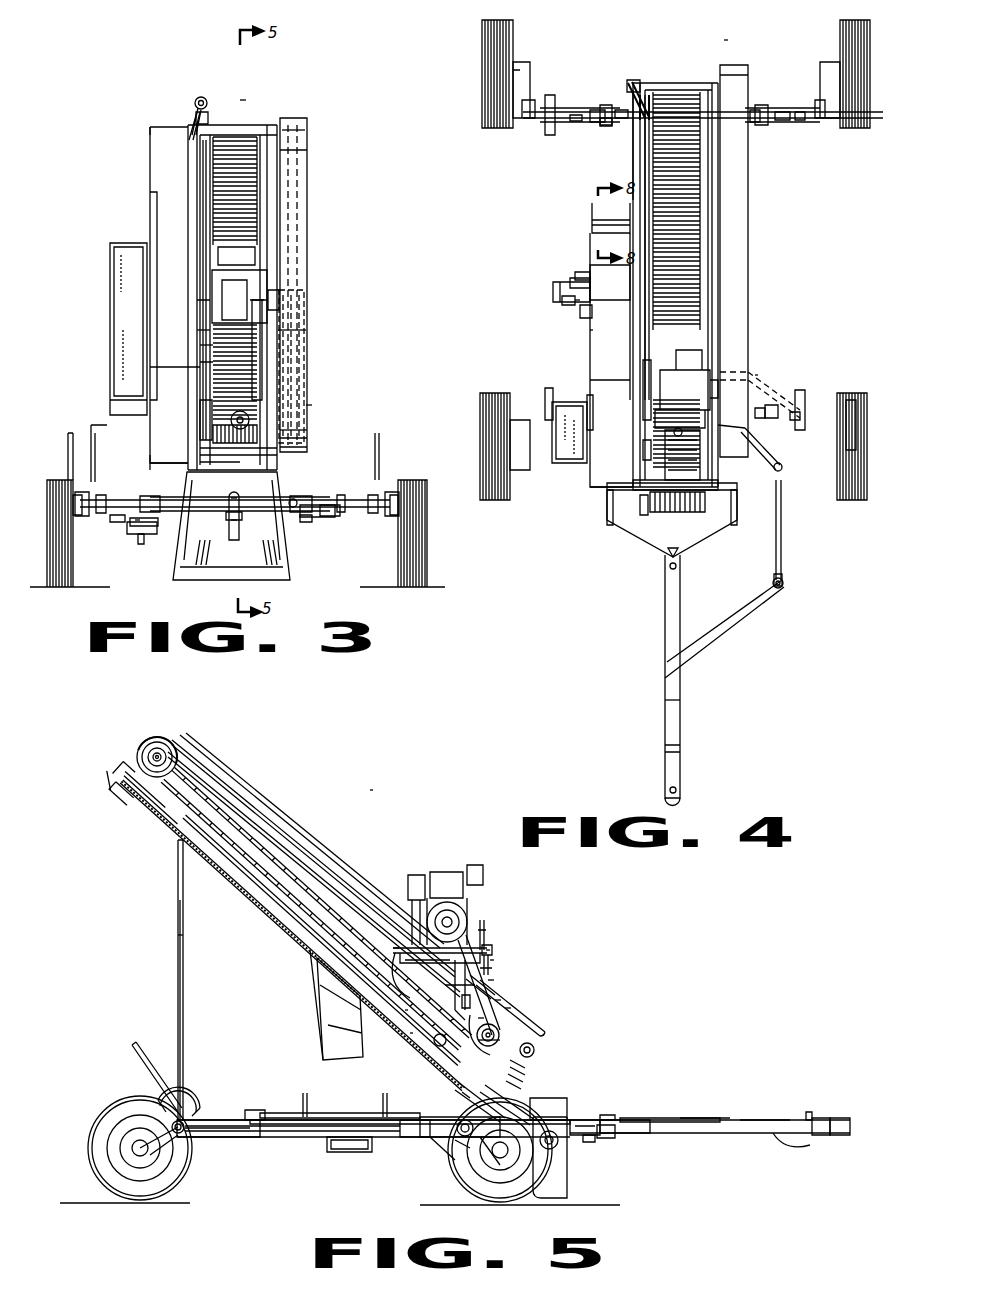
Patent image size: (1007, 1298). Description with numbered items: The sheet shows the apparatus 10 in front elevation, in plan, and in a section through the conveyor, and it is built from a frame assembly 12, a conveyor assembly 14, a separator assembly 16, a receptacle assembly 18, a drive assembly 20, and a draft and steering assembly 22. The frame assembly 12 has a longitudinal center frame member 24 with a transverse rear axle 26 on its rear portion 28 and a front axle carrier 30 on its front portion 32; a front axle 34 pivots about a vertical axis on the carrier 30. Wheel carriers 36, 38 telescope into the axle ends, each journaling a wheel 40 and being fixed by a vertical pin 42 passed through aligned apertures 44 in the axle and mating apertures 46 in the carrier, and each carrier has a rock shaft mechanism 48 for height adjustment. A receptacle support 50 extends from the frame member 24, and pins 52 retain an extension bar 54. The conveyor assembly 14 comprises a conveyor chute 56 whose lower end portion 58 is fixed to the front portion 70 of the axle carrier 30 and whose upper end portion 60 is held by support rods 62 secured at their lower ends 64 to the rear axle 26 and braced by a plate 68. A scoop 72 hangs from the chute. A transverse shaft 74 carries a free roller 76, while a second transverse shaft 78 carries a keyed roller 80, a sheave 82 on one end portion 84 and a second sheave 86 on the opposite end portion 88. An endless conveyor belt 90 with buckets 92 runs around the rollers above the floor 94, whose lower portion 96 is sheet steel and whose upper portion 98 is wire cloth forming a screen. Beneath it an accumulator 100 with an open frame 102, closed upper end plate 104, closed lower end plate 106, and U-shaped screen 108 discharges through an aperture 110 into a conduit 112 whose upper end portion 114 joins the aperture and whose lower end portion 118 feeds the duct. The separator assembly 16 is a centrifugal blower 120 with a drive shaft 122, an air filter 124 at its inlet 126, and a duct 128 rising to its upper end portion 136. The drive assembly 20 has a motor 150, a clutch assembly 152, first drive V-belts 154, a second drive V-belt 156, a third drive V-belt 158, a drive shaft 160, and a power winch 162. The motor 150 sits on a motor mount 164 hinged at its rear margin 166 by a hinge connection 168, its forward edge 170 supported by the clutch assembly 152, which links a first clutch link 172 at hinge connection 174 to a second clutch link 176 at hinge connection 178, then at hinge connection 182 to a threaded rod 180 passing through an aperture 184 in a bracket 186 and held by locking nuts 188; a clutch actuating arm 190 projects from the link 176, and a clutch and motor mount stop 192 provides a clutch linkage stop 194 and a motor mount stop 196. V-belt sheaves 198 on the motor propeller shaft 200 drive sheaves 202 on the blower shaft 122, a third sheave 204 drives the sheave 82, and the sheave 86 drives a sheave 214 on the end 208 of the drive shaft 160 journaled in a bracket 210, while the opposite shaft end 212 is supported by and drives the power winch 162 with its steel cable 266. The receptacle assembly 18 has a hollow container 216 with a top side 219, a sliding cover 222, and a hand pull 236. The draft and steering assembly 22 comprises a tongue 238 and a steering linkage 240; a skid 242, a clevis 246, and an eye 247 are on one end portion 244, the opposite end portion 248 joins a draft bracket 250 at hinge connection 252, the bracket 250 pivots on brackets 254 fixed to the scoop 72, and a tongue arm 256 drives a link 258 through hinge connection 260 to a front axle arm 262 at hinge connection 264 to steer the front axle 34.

In FIG. 3, the apparatus 10 is at (245, 98).
In FIG. 4, the apparatus 10 is at (735, 32).
In FIG. 5, the apparatus 10 is at (378, 778).
In FIG. 3, the frame assembly 12 is at (295, 530).
In FIG. 4, the frame assembly 12 is at (608, 92).
In FIG. 5, the frame assembly 12 is at (265, 1140).
In FIG. 3, the conveyor assembly 14 is at (252, 125).
In FIG. 4, the conveyor assembly 14 is at (712, 290).
In FIG. 5, the conveyor assembly 14 is at (410, 1035).
In FIG. 3, the separator assembly 16 is at (140, 462).
In FIG. 4, the separator assembly 16 is at (580, 333).
In FIG. 3, the receptacle assembly 18 is at (142, 555).
In FIG. 4, the receptacle assembly 18 is at (570, 310).
In FIG. 3, the drive assembly 20 is at (320, 408).
In FIG. 4, the drive assembly 20 is at (765, 362).
In FIG. 5, the drive assembly 20 is at (480, 885).
In FIG. 3, the draft and steering assembly 22 is at (233, 530).
In FIG. 4, the draft and steering assembly 22 is at (695, 690).
In FIG. 5, the draft and steering assembly 22 is at (765, 1100).
In FIG. 5, the longitudinal center frame member 24 is at (286, 1138).
In FIG. 4, the transverse rear axle 26 is at (602, 118).
In FIG. 5, the transverse rear axle 26 is at (190, 1130).
In FIG. 5, the rear portion 28 is at (207, 1140).
In FIG. 5, the front axle carrier 30 is at (470, 1160).
In FIG. 5, the front portion 32 is at (408, 1138).
In FIG. 4, the front axle 34 is at (738, 378).
In FIG. 5, the front axle 34 is at (455, 1140).
In FIG. 4, the wheel carrier 36 is at (555, 105).
In FIG. 3, the wheel carrier 38 is at (125, 505).
In FIG. 4, the wheel carrier 38 is at (800, 118).
In FIG. 3, the wheel 40 is at (58, 476).
In FIG. 4, the wheel 40 is at (515, 30).
In FIG. 5, the wheel 40 is at (150, 1195).
In FIG. 3, the vertically oriented pin 42 is at (152, 512).
In FIG. 4, the vertically oriented pin 42 is at (596, 110).
In FIG. 3, the aligned apertures 44 is at (150, 515).
In FIG. 4, the aligned apertures 44 is at (605, 108).
In FIG. 4, the aligned apertures 46 is at (575, 122).
In FIG. 3, the rock shaft mechanism 48 is at (96, 520).
In FIG. 4, the rock shaft mechanism 48 is at (528, 104).
In FIG. 5, the rock shaft mechanism 48 is at (165, 1178).
In FIG. 3, the receptacle support 50 is at (150, 540).
In FIG. 4, the receptacle support 50 is at (585, 312).
In FIG. 5, the receptacle support 50 is at (335, 1152).
In FIG. 5, the parallel pins 52 is at (305, 1100).
In FIG. 5, the extension bar 54 is at (330, 1115).
In FIG. 3, the conveyor chute 56 is at (272, 207).
In FIG. 4, the conveyor chute 56 is at (640, 168).
In FIG. 5, the conveyor chute 56 is at (405, 1020).
In FIG. 5, the lower end portion 58 is at (560, 1110).
In FIG. 4, the upper end portion 60 is at (636, 148).
In FIG. 5, the upper end portion 60 is at (150, 815).
In FIG. 5, the support rods 62 is at (178, 882).
In FIG. 5, the lower end 64 is at (190, 1103).
In FIG. 5, the plate 68 is at (180, 940).
In FIG. 5, the front portion 70 is at (520, 1105).
In FIG. 3, the scoop 72 is at (270, 582).
In FIG. 5, the scoop 72 is at (570, 1188).
In FIG. 5, the transverse shaft 74 is at (560, 1120).
In FIG. 4, the roller 76 is at (645, 505).
In FIG. 5, the roller 76 is at (548, 1150).
In FIG. 5, the second transverse shaft 78 is at (152, 748).
In FIG. 5, the roller 80 is at (170, 752).
In FIG. 3, the sheave 82 is at (308, 127).
In FIG. 3, the end portion 84 is at (300, 115).
In FIG. 4, the end portion 84 is at (722, 78).
In FIG. 4, the second sheave 86 is at (618, 112).
In FIG. 4, the opposite end portion 88 is at (642, 82).
In FIG. 3, the endless conveyor belt 90 is at (250, 176).
In FIG. 4, the endless conveyor belt 90 is at (690, 222).
In FIG. 5, the endless conveyor belt 90 is at (220, 798).
In FIG. 5, the buckets or vanes 92 is at (238, 820).
In FIG. 5, the floor 94 is at (258, 840).
In FIG. 5, the lower portion 96 is at (478, 1082).
In FIG. 5, the upper portion 98 is at (196, 778).
In FIG. 3, the accumulator 100 is at (198, 340).
In FIG. 5, the accumulator 100 is at (275, 928).
In FIG. 3, the open frame 102 is at (200, 350).
In FIG. 5, the closed upper end plate 104 is at (145, 797).
In FIG. 3, the closed lower end plate 106 is at (200, 365).
In FIG. 5, the closed lower end plate 106 is at (400, 1008).
In FIG. 5, the screen 108 is at (220, 878).
In FIG. 5, the aperture 110 is at (330, 995).
In FIG. 5, the conduit 112 is at (318, 1022).
In FIG. 5, the upper end portion 114 is at (310, 968).
In FIG. 4, the lower end portion 118 is at (600, 280).
In FIG. 3, the centrifugal blower 120 is at (158, 430).
In FIG. 4, the centrifugal blower 120 is at (600, 475).
In FIG. 3, the drive shaft 122 is at (245, 415).
In FIG. 4, the drive shaft 122 is at (680, 435).
In FIG. 5, the drive shaft 122 is at (500, 1038).
In FIG. 3, the air filter 124 is at (118, 294).
In FIG. 4, the air filter 124 is at (556, 468).
In FIG. 3, the inlet 126 is at (148, 412).
In FIG. 4, the inlet 126 is at (590, 400).
In FIG. 3, the duct 128 is at (160, 222).
In FIG. 4, the duct 128 is at (590, 350).
In FIG. 3, the upper end portion 136 is at (150, 133).
In FIG. 4, the upper end portion 136 is at (592, 215).
In FIG. 3, the motor 150 is at (228, 287).
In FIG. 4, the motor 150 is at (705, 390).
In FIG. 5, the motor 150 is at (455, 875).
In FIG. 3, the clutch assembly 152 is at (258, 385).
In FIG. 5, the clutch assembly 152 is at (482, 988).
In FIG. 3, the first drive V-belts 154 is at (290, 345).
In FIG. 5, the first drive V-belts 154 is at (488, 978).
In FIG. 3, the second drive V-belt 156 is at (285, 218).
In FIG. 5, the second drive V-belt 156 is at (308, 858).
In FIG. 3, the third drive V-belt 158 is at (191, 115).
In FIG. 4, the third drive V-belt 158 is at (647, 80).
In FIG. 3, the drive shaft 160 is at (205, 180).
In FIG. 4, the drive shaft 160 is at (648, 345).
In FIG. 3, the power winch 162 is at (262, 450).
In FIG. 4, the power winch 162 is at (630, 500).
In FIG. 5, the power winch 162 is at (535, 1052).
In FIG. 5, the motor mount 164 is at (475, 908).
In FIG. 5, the rear margin 166 is at (415, 875).
In FIG. 5, the hinge connection 168 is at (393, 950).
In FIG. 5, the forward edge 170 is at (482, 935).
In FIG. 5, the first clutch link 172 is at (515, 1010).
In FIG. 5, the hinge connection 174 is at (510, 1018).
In FIG. 5, the second clutch link 176 is at (500, 990).
In FIG. 5, the hinge connection 178 is at (505, 1002).
In FIG. 5, the threaded rod 180 is at (486, 945).
In FIG. 5, the hinge connection 182 is at (492, 985).
In FIG. 5, the aperture 184 is at (490, 950).
In FIG. 5, the bracket 186 is at (492, 962).
In FIG. 5, the locking nuts 188 is at (490, 950).
In FIG. 5, the clutch actuating arm 190 is at (520, 1025).
In FIG. 5, the clutch and motor mount stop 192 is at (438, 1046).
In FIG. 5, the clutch linkage stop 194 is at (474, 1000).
In FIG. 5, the motor mount stop 196 is at (430, 948).
In FIG. 3, the V-belt sheaves 198 is at (300, 300).
In FIG. 3, the motor propeller shaft 200 is at (272, 290).
In FIG. 3, the second pair of V-belt sheaves 202 is at (306, 430).
In FIG. 3, the third sheave 204 is at (306, 420).
In FIG. 3, the end 208 is at (212, 118).
In FIG. 3, the bracket 210 is at (196, 100).
In FIG. 3, the chain guard 212 is at (203, 412).
In FIG. 4, the chain guard 212 is at (645, 448).
In FIG. 3, the sheave 214 is at (206, 98).
In FIG. 3, the elongated hollow container 216 is at (138, 545).
In FIG. 4, the elongated hollow container 216 is at (572, 280).
In FIG. 4, the top side 219 is at (583, 270).
In FIG. 4, the cover 222 is at (553, 290).
In FIG. 3, the hand pull 236 is at (130, 530).
In FIG. 4, the hand pull 236 is at (565, 300).
In FIG. 3, the tongue 238 is at (240, 530).
In FIG. 4, the tongue 238 is at (665, 628).
In FIG. 5, the tongue 238 is at (730, 1128).
In FIG. 3, the steering linkage 240 is at (325, 500).
In FIG. 4, the steering linkage 240 is at (772, 585).
In FIG. 5, the steering linkage 240 is at (630, 1115).
In FIG. 3, the skid 242 is at (238, 520).
In FIG. 5, the skid 242 is at (795, 1150).
In FIG. 5, the end portion 244 is at (818, 1118).
In FIG. 3, the clevis 246 is at (230, 515).
In FIG. 4, the clevis 246 is at (678, 780).
In FIG. 5, the clevis 246 is at (838, 1118).
In FIG. 3, the loop or eye 247 is at (205, 462).
In FIG. 4, the loop or eye 247 is at (680, 748).
In FIG. 5, the loop or eye 247 is at (808, 1115).
In FIG. 4, the opposite end portion 248 is at (682, 568).
In FIG. 5, the opposite end portion 248 is at (650, 1133).
In FIG. 4, the draft bracket 250 is at (650, 550).
In FIG. 5, the draft bracket 250 is at (592, 1135).
In FIG. 4, the hinge connection 252 is at (670, 555).
In FIG. 5, the hinge connection 252 is at (605, 1135).
In FIG. 4, the brackets 254 is at (738, 497).
In FIG. 5, the brackets 254 is at (585, 1140).
In FIG. 3, the tongue arm 256 is at (293, 498).
In FIG. 4, the tongue arm 256 is at (748, 605).
In FIG. 5, the tongue arm 256 is at (695, 1118).
In FIG. 3, the link 258 is at (340, 512).
In FIG. 4, the link 258 is at (781, 545).
In FIG. 3, the hinge connection 260 is at (343, 494).
In FIG. 4, the hinge connection 260 is at (785, 585).
In FIG. 5, the hinge connection 260 is at (625, 1118).
In FIG. 4, the front axle arm 262 is at (765, 470).
In FIG. 4, the hinge connection 264 is at (783, 470).
In FIG. 3, the steel cable 266 is at (225, 441).
In FIG. 4, the steel cable 266 is at (682, 495).
In FIG. 5, the steel cable 266 is at (535, 1058).